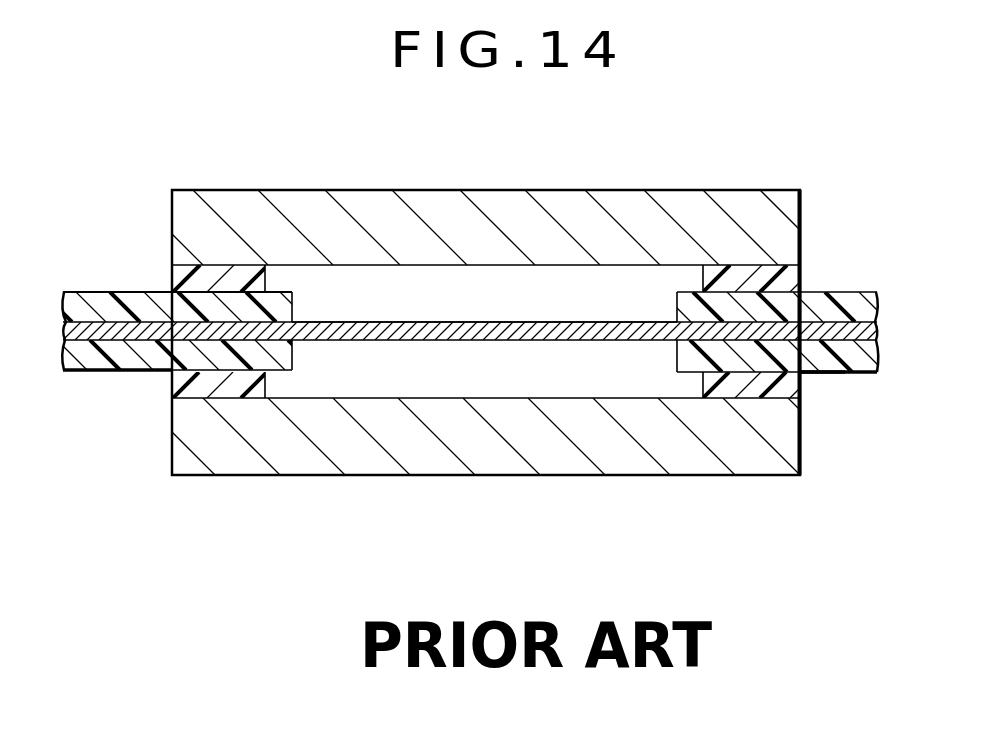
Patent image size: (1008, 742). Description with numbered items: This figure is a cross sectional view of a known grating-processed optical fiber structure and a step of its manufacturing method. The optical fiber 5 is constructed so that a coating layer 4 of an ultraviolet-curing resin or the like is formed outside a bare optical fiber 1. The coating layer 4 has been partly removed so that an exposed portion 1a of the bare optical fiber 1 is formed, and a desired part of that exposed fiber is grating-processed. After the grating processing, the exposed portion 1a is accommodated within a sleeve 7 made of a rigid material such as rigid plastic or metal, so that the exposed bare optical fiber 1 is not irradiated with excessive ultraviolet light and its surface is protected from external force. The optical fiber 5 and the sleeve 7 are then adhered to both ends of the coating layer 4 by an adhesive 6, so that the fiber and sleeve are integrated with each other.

The bare optical fiber 1 is at (512, 343).
The exposed portion 1a is at (487, 322).
The coating layer 4 is at (102, 360).
The optical fiber 5 is at (823, 375).
The adhesive 6 is at (221, 283).
The sleeve 7 is at (644, 215).